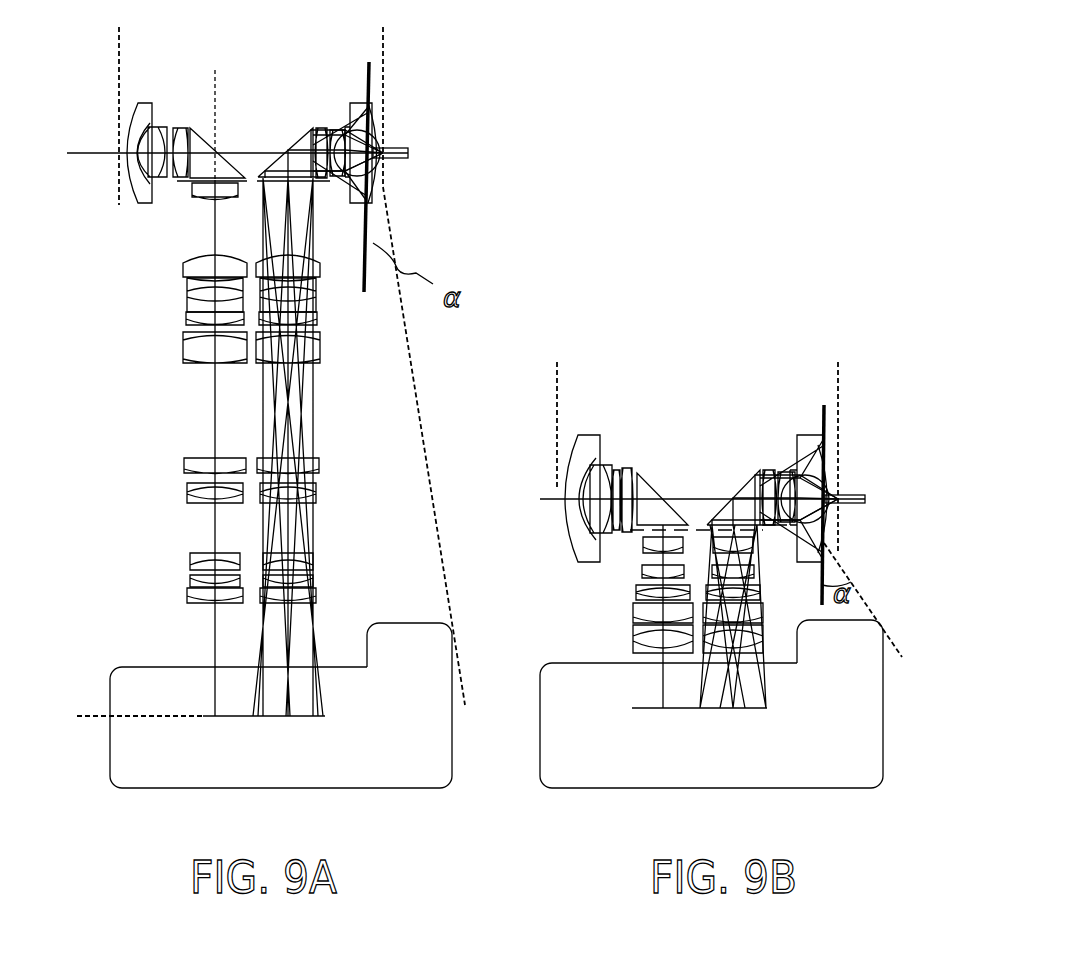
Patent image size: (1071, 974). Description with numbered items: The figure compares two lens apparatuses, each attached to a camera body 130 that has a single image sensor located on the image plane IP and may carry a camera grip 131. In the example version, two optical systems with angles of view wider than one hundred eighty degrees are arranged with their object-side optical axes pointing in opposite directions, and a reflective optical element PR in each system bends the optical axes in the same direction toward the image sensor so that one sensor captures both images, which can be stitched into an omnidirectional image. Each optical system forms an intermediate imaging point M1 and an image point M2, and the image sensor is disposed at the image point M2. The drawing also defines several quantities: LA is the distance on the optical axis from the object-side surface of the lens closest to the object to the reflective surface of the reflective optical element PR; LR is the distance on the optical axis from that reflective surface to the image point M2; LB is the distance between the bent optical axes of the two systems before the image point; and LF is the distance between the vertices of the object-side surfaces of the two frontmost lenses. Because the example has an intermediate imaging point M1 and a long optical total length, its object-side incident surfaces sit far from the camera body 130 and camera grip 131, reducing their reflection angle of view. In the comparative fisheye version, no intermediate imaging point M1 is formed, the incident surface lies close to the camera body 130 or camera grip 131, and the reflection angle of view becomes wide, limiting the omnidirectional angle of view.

In FIG. 9A, the camera body 130 is at (110, 765).
In FIG. 9B, the camera body 130 is at (553, 664).
In FIG. 9A, the camera grip 131 is at (413, 623).
In FIG. 9B, the camera grip 131 is at (858, 594).
In FIG. 9A, the reflective optical element PR is at (299, 146).
In FIG. 9B, the reflective optical element PR is at (741, 495).
In FIG. 9A, the intermediate imaging point M1 is at (292, 337).
In FIG. 9B, the intermediate imaging point M1 is at (733, 595).
In FIG. 9A, the image point M2 is at (291, 718).
In FIG. 9A, the image plane IP is at (195, 717).
In FIG. 9B, the image plane IP is at (632, 709).
In FIG. 9A, the distance between object-side lens vertices LF is at (383, 42).
In FIG. 9B, the distance between object-side lens vertices LF is at (838, 375).
In FIG. 9A, the object-side distance to reflective surface LA is at (215, 82).
In FIG. 9A, the distance from reflective surface to image point LR is at (96, 153).
In FIG. 9A, the distance between bent optical axes LB is at (288, 652).